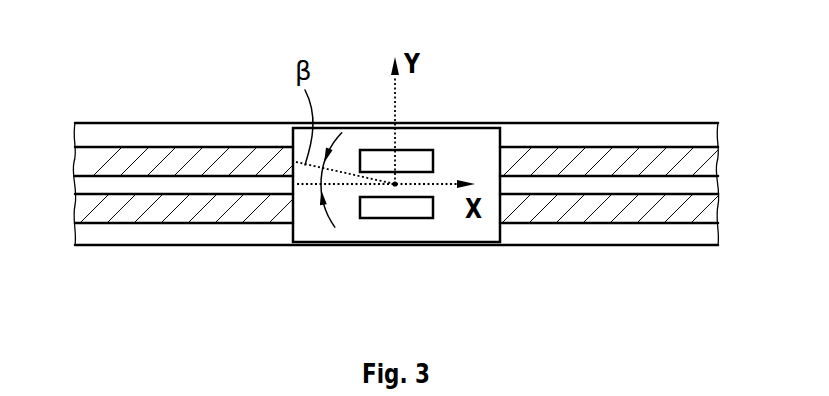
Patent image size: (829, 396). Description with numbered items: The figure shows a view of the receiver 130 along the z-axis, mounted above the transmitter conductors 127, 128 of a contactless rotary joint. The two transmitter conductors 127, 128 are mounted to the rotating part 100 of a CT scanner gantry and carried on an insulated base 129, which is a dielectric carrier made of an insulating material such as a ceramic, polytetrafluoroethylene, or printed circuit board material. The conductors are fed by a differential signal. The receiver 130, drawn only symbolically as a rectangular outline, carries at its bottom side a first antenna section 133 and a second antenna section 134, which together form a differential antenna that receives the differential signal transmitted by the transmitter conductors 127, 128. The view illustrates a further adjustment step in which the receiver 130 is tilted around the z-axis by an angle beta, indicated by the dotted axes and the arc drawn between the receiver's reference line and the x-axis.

The rotating part 100 is at (532, 247).
The transmitter conductor 127 is at (655, 210).
The transmitter conductor 128 is at (652, 163).
The insulated base 129 is at (593, 230).
The receiver 130 is at (472, 100).
The first antenna section 133 is at (381, 160).
The second antenna section 134 is at (377, 207).